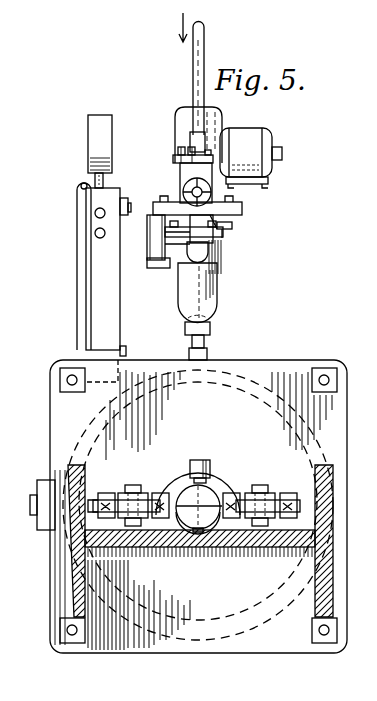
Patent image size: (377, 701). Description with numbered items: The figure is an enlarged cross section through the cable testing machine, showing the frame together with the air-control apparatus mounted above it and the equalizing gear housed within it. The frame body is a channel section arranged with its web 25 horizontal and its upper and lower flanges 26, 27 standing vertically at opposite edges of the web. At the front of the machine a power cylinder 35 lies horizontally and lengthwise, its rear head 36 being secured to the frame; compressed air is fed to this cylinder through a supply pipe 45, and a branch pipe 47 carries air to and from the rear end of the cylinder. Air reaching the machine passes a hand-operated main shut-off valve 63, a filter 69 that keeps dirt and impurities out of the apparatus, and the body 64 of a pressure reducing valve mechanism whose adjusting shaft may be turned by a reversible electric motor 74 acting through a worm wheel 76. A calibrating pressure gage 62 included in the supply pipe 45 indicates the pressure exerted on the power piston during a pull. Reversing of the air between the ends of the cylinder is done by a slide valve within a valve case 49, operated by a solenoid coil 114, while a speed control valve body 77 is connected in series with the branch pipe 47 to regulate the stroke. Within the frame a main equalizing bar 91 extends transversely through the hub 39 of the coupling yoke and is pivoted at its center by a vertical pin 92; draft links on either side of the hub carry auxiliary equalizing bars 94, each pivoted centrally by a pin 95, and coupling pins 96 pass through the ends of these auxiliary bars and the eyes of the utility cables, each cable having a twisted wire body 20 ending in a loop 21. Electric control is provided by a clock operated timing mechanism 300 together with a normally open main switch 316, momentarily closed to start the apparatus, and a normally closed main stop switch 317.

The supply pipe 45 is at (204, 26).
The solenoid coil 114 is at (182, 120).
The worm wheel 76 is at (178, 154).
The reversible electric motor 74 is at (280, 136).
The main shut-off valve 63 is at (184, 189).
The valve case 49 is at (243, 208).
The pressure reducing valve body 64 is at (232, 226).
The calibrating pressure gage 62 is at (156, 264).
The filter 69 is at (218, 293).
The speed control valve body 77 is at (210, 328).
The rear branch pipe 47 is at (206, 345).
The timing mechanism 300 is at (98, 137).
The main switch 316 is at (95, 213).
The main stop switch 317 is at (95, 234).
The vertical pin 92 is at (200, 460).
The hub 39 is at (212, 482).
The utility cable body 20 is at (233, 493).
The auxiliary equalizing bar 94 is at (118, 495).
The pin 95 is at (258, 493).
The coupling pin 96 is at (292, 493).
The upper flange 26 is at (70, 470).
The loop 21 is at (300, 506).
The web 25 is at (160, 540).
The main equalizing bar 91 is at (212, 525).
The rear head 36 is at (206, 616).
The lower flange 27 is at (72, 611).
The power cylinder 35 is at (196, 645).